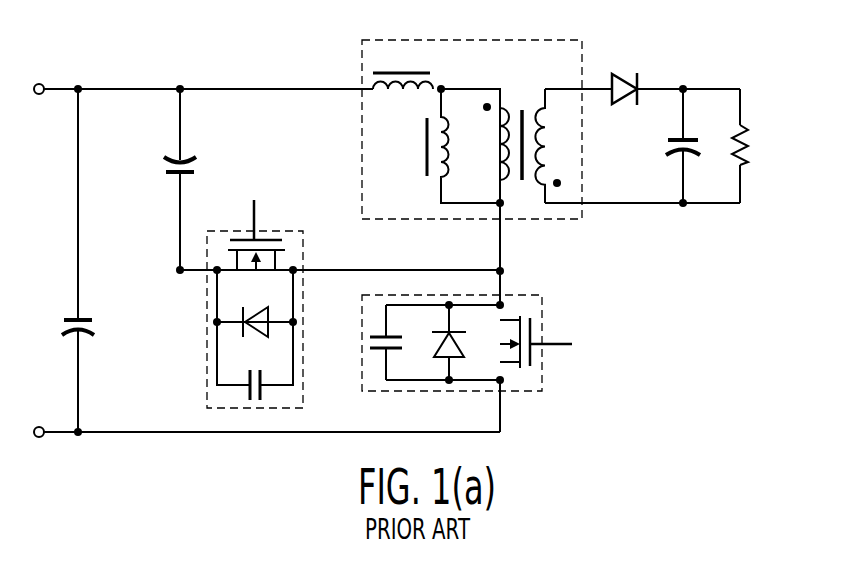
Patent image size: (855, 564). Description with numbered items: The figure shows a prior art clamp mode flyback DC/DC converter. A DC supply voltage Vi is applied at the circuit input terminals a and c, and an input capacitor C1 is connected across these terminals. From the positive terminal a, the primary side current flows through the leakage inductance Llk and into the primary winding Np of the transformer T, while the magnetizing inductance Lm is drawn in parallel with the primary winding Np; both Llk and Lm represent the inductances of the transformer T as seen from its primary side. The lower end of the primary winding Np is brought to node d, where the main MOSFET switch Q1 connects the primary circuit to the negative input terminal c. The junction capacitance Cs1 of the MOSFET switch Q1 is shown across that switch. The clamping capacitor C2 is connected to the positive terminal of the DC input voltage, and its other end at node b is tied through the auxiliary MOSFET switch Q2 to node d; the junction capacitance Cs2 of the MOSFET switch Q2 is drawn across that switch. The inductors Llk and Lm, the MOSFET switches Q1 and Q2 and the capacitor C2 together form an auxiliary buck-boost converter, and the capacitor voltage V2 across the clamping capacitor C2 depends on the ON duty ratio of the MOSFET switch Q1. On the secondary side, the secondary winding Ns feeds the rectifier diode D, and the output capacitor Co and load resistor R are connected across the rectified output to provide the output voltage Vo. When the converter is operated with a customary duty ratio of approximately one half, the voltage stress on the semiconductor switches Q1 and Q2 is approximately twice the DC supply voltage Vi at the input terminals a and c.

The input terminal a is at (38, 104).
The node b is at (170, 271).
The input terminal c is at (38, 415).
The node d is at (507, 271).
The DC supply voltage Vi is at (31, 259).
The input capacitor C1 is at (95, 323).
The clamping capacitor C2 is at (164, 167).
The capacitor voltage V2 is at (205, 170).
The MOSFET switch Q2 is at (255, 235).
The junction capacitance Cs2 is at (234, 326).
The junction capacitance Cs1 is at (452, 360).
The MOSFET switch Q1 is at (537, 338).
The transformer T is at (459, 129).
The leakage inductance Llk is at (403, 65).
The magnetizing inductance Lm is at (445, 146).
The primary winding Np is at (496, 146).
The secondary winding Ns is at (557, 146).
The rectifier diode D is at (624, 78).
The output capacitor Co is at (669, 149).
The load resistor R is at (731, 145).
The output voltage Vo is at (761, 147).